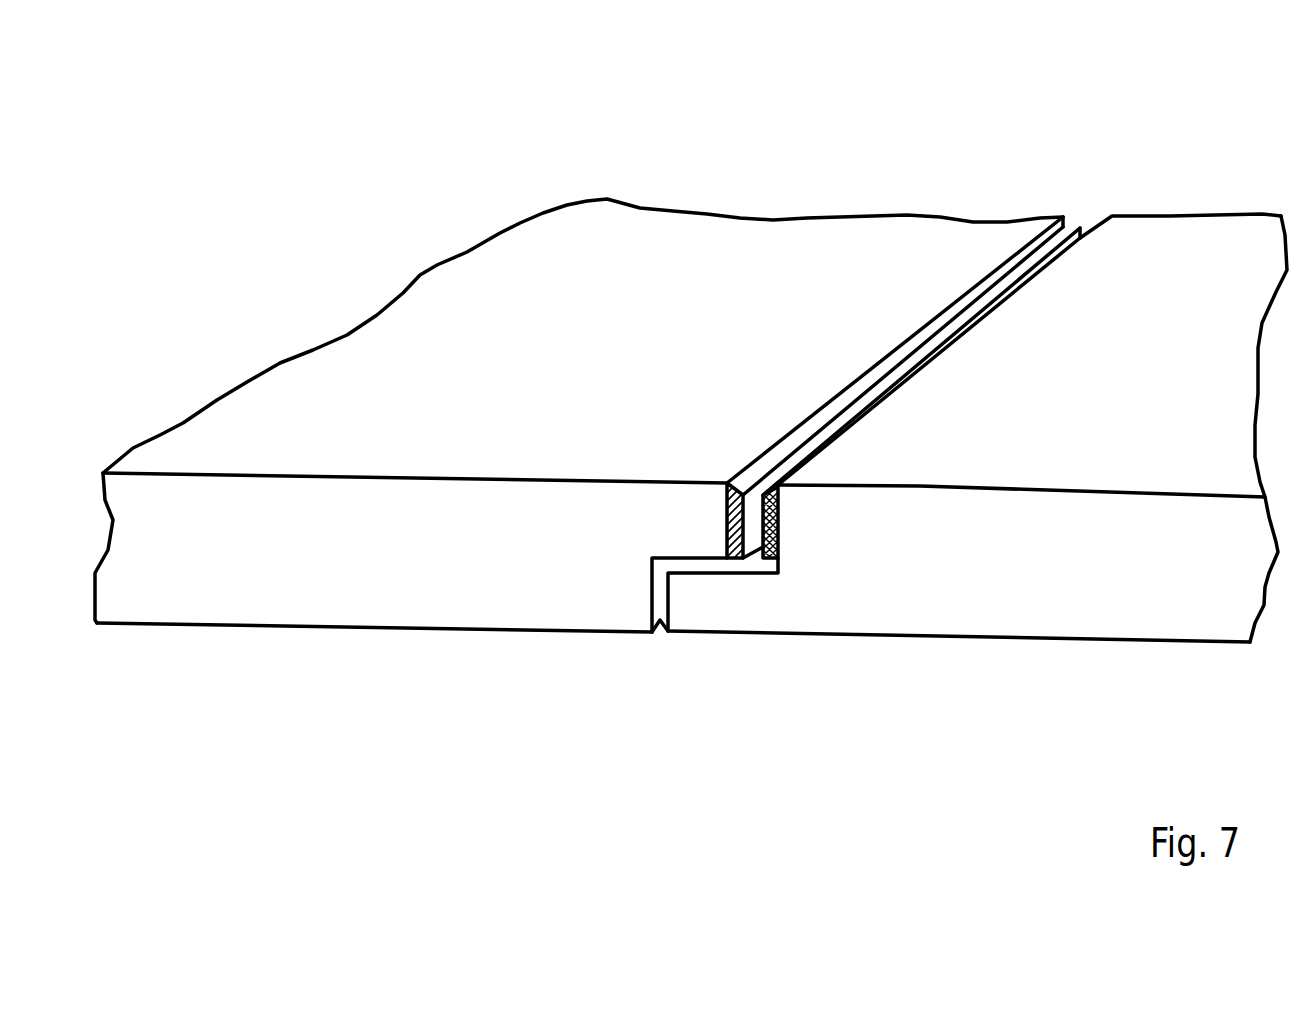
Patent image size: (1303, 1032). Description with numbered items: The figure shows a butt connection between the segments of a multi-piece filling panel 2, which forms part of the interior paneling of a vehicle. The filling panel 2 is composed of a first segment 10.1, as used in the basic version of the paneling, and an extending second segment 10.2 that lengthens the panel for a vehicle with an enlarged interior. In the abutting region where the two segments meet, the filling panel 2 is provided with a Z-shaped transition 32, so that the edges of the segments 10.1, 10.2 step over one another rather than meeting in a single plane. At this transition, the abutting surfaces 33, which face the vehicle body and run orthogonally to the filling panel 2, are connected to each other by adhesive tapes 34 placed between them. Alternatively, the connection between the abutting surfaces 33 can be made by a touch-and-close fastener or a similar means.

The filling panel 2 is at (691, 433).
The first segment 10.1 is at (367, 595).
The second segment 10.2 is at (1015, 612).
The Z-shaped transition 32 is at (607, 692).
The abutting surfaces 33 is at (727, 490).
The adhesive tapes 34 is at (727, 548).